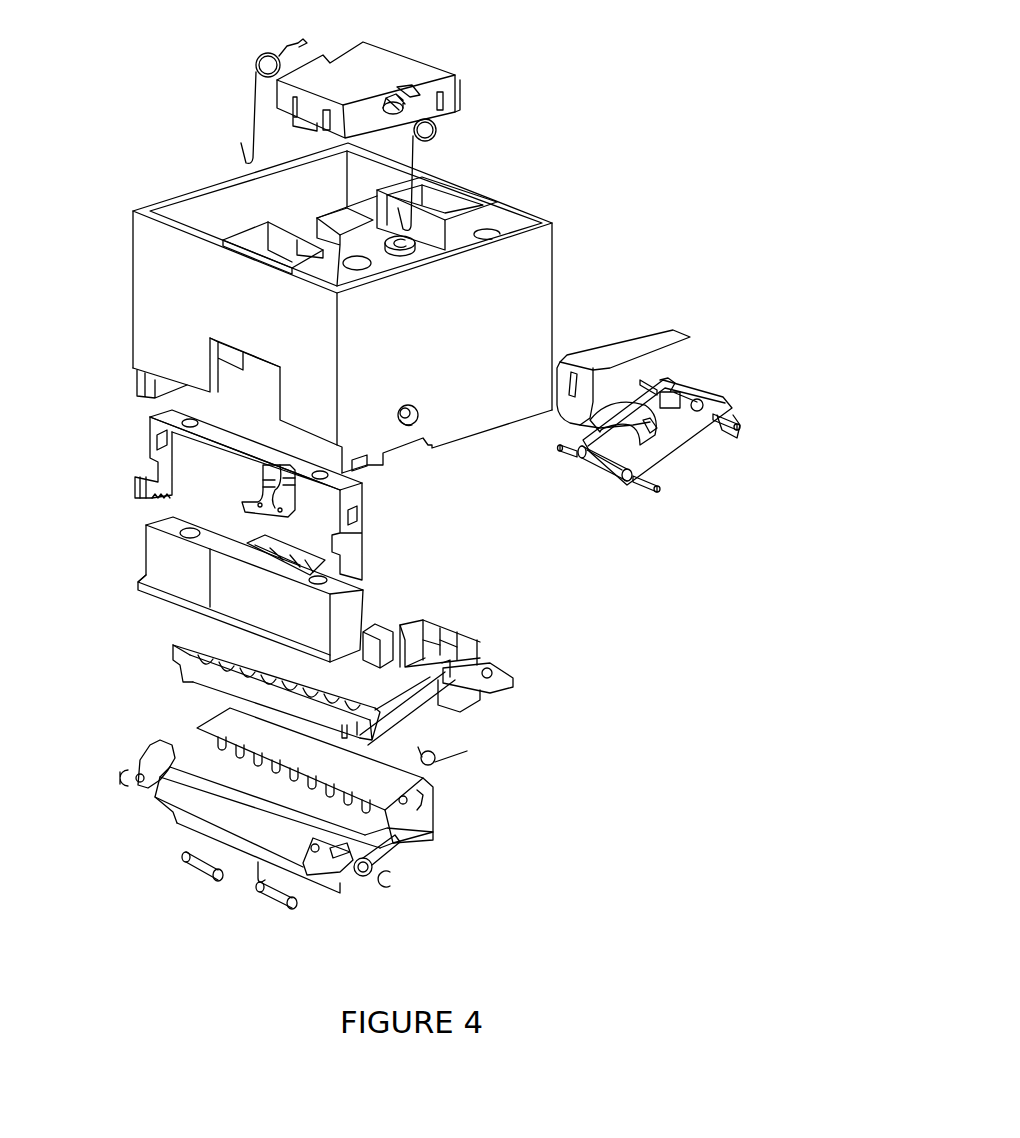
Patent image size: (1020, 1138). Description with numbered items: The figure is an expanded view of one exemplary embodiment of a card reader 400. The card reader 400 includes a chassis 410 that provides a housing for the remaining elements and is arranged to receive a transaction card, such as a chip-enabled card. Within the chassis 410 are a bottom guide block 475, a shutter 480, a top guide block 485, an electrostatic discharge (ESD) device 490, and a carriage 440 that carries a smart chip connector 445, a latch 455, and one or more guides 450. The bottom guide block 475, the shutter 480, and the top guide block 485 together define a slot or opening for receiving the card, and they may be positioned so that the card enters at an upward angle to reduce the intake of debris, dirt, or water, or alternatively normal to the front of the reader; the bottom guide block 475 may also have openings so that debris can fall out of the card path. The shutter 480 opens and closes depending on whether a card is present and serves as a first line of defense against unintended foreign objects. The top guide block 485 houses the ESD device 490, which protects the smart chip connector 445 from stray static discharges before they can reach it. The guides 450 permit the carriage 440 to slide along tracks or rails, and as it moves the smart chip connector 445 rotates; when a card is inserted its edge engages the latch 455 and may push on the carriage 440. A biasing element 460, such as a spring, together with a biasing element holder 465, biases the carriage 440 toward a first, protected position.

The card reader 400 is at (656, 822).
The chassis 410 is at (110, 360).
The carriage 440 is at (578, 502).
The smart chip connector 445 is at (663, 449).
The guides 450 is at (635, 501).
The latch 455 is at (738, 462).
The biasing element 460 is at (233, 107).
The biasing element holder 465 is at (474, 82).
The bottom guide block 475 is at (425, 882).
The shutter 480 is at (153, 688).
The top guide block 485 is at (138, 616).
The electrostatic discharge (ESD) device 490 is at (110, 518).